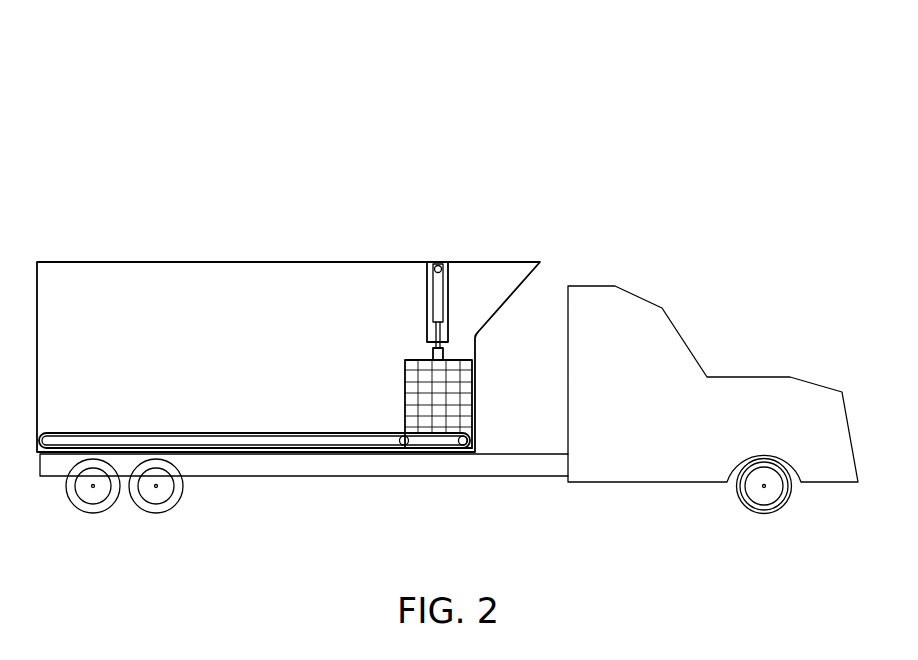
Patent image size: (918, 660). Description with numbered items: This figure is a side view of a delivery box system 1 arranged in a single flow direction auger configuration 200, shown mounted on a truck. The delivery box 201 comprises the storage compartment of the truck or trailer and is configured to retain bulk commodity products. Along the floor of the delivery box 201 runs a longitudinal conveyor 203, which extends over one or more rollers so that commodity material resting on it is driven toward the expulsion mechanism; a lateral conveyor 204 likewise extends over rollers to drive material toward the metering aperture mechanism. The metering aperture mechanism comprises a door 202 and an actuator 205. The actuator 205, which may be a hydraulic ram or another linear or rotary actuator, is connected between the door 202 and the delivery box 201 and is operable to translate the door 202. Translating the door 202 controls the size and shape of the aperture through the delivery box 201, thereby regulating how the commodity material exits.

The delivery box system 1 is at (553, 72).
The single flow direction auger configuration 200 is at (553, 140).
The delivery box 201 is at (498, 262).
The door 202 is at (470, 370).
The longitudinal conveyor 203 is at (335, 447).
The lateral conveyor 204 is at (438, 452).
The actuator 205 is at (440, 272).